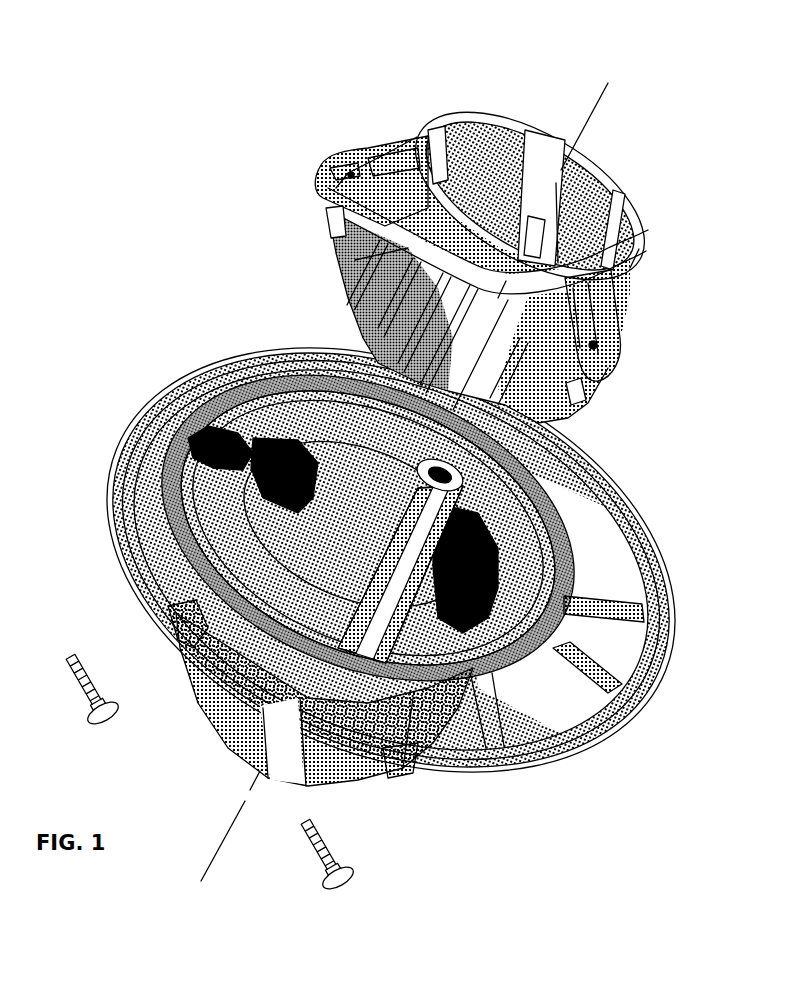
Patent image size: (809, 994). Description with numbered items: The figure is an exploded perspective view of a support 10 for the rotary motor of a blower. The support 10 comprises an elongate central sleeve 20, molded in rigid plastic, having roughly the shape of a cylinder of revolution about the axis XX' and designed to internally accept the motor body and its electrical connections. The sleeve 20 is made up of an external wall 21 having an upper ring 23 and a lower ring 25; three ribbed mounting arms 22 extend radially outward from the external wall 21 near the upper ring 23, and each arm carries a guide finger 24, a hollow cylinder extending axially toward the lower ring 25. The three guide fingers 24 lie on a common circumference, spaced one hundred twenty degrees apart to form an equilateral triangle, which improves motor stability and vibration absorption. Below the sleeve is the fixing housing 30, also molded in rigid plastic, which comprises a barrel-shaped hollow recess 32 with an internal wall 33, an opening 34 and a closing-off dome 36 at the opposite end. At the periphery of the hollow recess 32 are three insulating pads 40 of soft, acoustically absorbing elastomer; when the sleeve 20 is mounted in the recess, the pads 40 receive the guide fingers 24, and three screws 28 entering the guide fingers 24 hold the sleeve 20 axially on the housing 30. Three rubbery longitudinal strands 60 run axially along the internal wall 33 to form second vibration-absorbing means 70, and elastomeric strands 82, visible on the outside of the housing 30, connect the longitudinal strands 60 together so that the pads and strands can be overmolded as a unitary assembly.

The support 10 is at (690, 418).
The elongate central sleeve 20 is at (640, 206).
The external wall 21 is at (347, 252).
The mounting arms 22 is at (313, 153).
The upper ring 23 is at (433, 190).
The guide fingers 24 is at (317, 216).
The lower ring 25 is at (337, 320).
The screws 28 is at (362, 838).
The fixing housing 30 is at (684, 642).
The hollow recess 32 is at (320, 552).
The internal wall 33 is at (522, 660).
The opening 34 is at (268, 410).
The closing-off dome 36 is at (203, 690).
The insulating pads 40 is at (245, 445).
The longitudinal strands 60 is at (295, 765).
The second vibration-absorbing means 70 is at (322, 556).
The elastomeric strands 82 is at (172, 638).